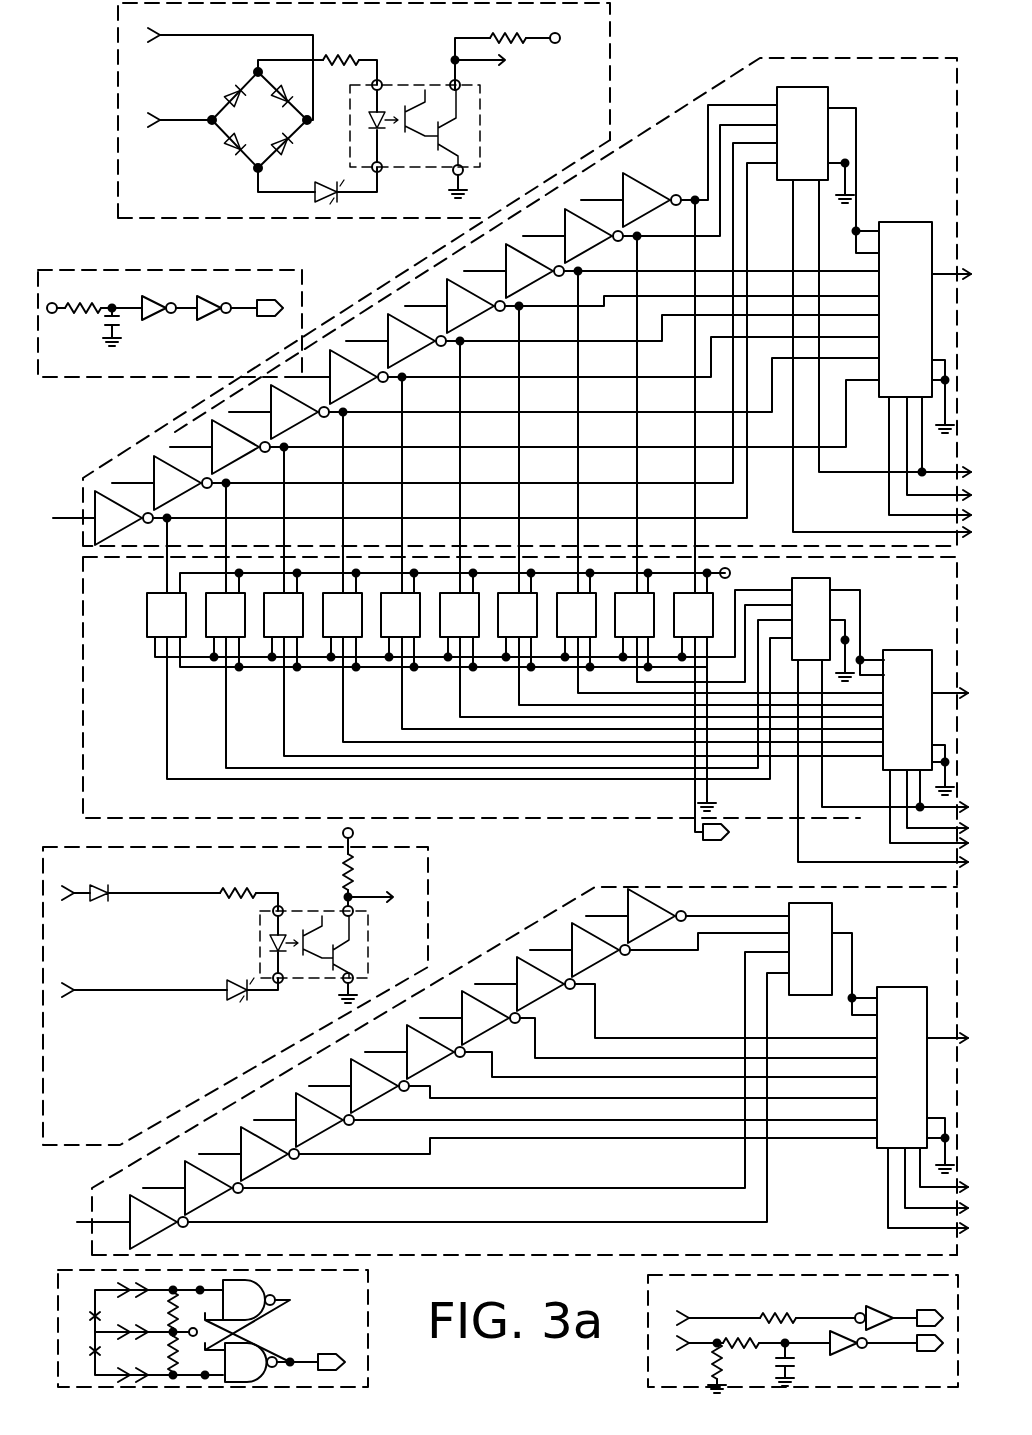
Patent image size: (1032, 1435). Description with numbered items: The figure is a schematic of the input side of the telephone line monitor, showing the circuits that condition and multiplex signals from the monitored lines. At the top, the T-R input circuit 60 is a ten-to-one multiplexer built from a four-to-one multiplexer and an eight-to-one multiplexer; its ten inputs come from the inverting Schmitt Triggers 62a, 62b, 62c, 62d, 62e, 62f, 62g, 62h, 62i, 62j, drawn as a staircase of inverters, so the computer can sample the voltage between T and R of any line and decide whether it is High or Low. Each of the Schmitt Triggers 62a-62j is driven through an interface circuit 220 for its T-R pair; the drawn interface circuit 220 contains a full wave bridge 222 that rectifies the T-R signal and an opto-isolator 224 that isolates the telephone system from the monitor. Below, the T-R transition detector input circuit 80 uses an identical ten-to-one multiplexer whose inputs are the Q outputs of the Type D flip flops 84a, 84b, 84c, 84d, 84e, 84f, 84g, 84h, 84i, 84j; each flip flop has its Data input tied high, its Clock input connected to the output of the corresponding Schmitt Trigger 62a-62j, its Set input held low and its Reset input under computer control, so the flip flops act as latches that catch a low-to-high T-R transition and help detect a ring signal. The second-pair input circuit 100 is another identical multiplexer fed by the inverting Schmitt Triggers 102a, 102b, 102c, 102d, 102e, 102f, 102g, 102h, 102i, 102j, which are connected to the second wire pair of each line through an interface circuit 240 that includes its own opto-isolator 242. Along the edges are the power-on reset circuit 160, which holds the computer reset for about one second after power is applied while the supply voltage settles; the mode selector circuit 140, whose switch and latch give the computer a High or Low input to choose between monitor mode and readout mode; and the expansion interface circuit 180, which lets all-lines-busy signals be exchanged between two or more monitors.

The T-R input circuit 60 is at (512, 325).
The inverting Schmitt Trigger 62a is at (112, 518).
The inverting Schmitt Trigger 62b is at (171, 483).
The inverting Schmitt Trigger 62c is at (229, 447).
The inverting Schmitt Trigger 62d is at (288, 412).
The inverting Schmitt Trigger 62e is at (347, 377).
The inverting Schmitt Trigger 62f is at (405, 341).
The inverting Schmitt Trigger 62g is at (464, 306).
The inverting Schmitt Trigger 62h is at (523, 271).
The inverting Schmitt Trigger 62i is at (582, 236).
The inverting Schmitt Trigger 62j is at (640, 200).
The T-R transition detector input circuit 80 is at (525, 906).
The flip flop 84a is at (162, 618).
The flip flop 84b is at (221, 618).
The flip flop 84c is at (280, 618).
The flip flop 84d is at (339, 618).
The flip flop 84e is at (397, 618).
The flip flop 84f is at (455, 618).
The flip flop 84g is at (514, 618).
The flip flop 84h is at (572, 618).
The flip flop 84i is at (631, 618).
The flip flop 84j is at (689, 618).
The A-A1 input circuit 100 is at (522, 1073).
The inverting Schmitt Trigger 102a is at (148, 1230).
The inverting Schmitt Trigger 102b is at (203, 1196).
The inverting Schmitt Trigger 102c is at (259, 1162).
The inverting Schmitt Trigger 102d is at (314, 1128).
The inverting Schmitt Trigger 102e is at (369, 1094).
The inverting Schmitt Trigger 102f is at (425, 1060).
The inverting Schmitt Trigger 102g is at (480, 1026).
The inverting Schmitt Trigger 102h is at (535, 992).
The inverting Schmitt Trigger 102i is at (604, 958).
The inverting Schmitt Trigger 102j is at (670, 910).
The mode selector circuit 140 is at (213, 1328).
The power-on reset circuit 160 is at (170, 323).
The expansion interface circuit 180 is at (803, 1334).
The interface circuit 220 is at (364, 110).
The full wave bridge 222 is at (228, 103).
The opto-isolator 224 is at (345, 95).
The interface circuit 240 is at (235, 985).
The opto-isolator 242 is at (312, 915).